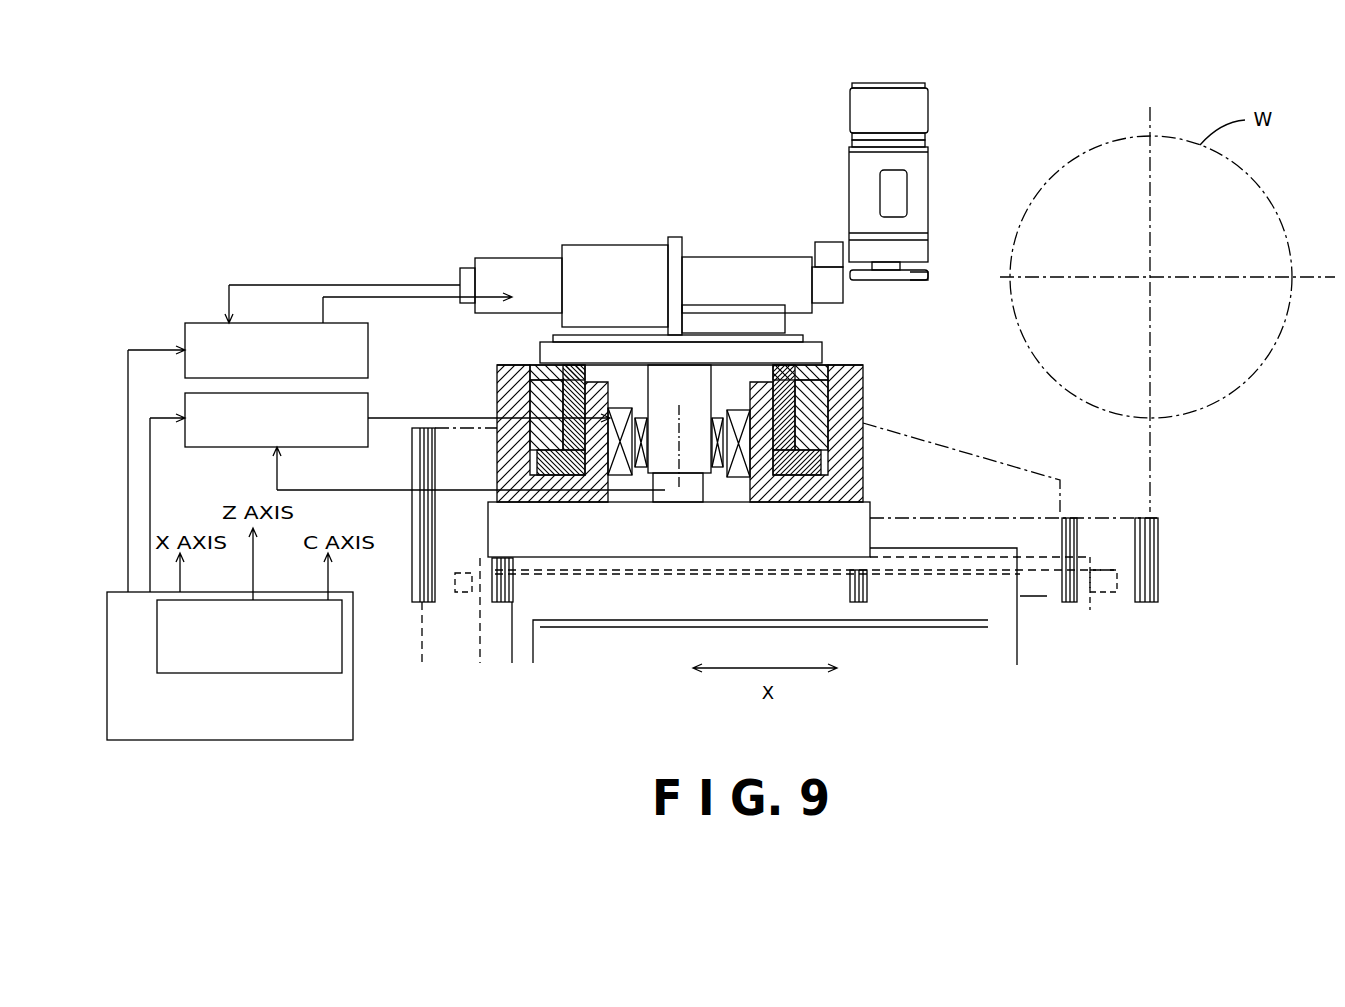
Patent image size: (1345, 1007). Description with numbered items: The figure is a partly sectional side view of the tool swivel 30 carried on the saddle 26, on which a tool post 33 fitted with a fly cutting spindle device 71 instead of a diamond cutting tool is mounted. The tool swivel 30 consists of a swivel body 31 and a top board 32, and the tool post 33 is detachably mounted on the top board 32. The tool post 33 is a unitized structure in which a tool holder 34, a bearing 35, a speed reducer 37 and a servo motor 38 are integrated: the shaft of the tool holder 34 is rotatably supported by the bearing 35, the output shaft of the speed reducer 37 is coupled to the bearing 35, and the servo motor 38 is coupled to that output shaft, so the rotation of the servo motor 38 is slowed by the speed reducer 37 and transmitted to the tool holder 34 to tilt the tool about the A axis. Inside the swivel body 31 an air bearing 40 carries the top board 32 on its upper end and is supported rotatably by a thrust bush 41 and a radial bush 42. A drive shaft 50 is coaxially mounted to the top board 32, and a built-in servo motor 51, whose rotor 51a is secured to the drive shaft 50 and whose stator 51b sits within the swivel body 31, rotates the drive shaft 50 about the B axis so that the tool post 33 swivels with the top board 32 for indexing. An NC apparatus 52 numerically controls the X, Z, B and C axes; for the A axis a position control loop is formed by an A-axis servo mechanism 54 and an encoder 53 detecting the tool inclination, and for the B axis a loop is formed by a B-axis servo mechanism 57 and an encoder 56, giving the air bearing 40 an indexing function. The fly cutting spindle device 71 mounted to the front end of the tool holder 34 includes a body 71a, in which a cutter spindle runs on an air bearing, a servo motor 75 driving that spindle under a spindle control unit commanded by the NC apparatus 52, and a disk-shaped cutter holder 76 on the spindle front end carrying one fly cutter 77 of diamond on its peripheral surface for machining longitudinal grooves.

The saddle 26 is at (983, 652).
The tool swivel 30 is at (879, 410).
The swivel body 31 is at (852, 382).
The top board 32 is at (548, 355).
The tool post 33 is at (668, 218).
The tool holder 34 is at (828, 272).
The bearing 35 is at (730, 265).
The speed reducer 37 is at (610, 257).
The servo motor 38 is at (512, 267).
The air bearing 40 is at (572, 474).
The thrust bush 41 is at (537, 462).
The radial bush 42 is at (535, 393).
The drive shaft 50 is at (690, 473).
The built-in servo motor 51 is at (725, 446).
The rotor 51a is at (718, 420).
The stator 51b is at (735, 410).
The NC apparatus 52 is at (253, 740).
The encoder 53 is at (342, 638).
The A-axis servo mechanism 54 is at (370, 341).
The encoder 56 is at (657, 479).
The B-axis servo mechanism 57 is at (372, 395).
The fly cutting spindle device 71 is at (945, 158).
The body 71a is at (917, 188).
The servo motor 75 is at (917, 110).
The cutter holder 76 is at (890, 282).
The fly cutter 77 is at (930, 278).